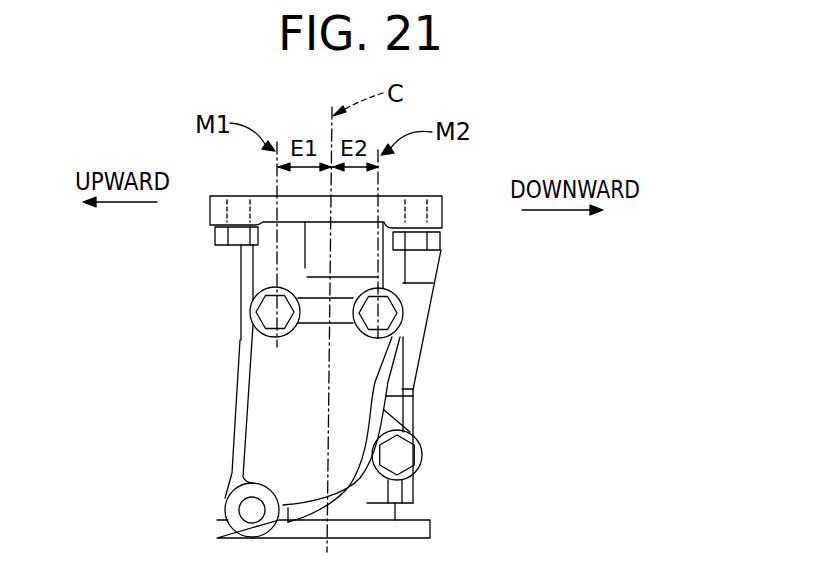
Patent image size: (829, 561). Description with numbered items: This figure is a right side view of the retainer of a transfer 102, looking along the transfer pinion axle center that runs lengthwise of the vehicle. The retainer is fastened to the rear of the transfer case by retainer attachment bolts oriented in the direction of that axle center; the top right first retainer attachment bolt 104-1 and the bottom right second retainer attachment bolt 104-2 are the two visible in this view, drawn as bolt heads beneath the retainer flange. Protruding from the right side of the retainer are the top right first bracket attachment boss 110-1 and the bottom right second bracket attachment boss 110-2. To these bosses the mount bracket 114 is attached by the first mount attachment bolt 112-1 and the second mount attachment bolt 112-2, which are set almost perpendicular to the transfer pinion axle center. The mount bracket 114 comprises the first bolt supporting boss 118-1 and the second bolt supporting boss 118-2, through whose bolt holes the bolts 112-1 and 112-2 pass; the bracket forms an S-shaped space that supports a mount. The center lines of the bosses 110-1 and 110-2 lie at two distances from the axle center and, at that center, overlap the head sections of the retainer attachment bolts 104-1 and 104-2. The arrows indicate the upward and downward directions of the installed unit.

The transfer 102 is at (474, 180).
The retainer attachment bolt NO. 1 104-1 is at (215, 236).
The retainer attachment bolt NO. 2 104-2 is at (437, 240).
The NO. 1 bolt supporting boss 118-1 is at (258, 292).
The NO. 2 bolt supporting boss 118-2 is at (404, 290).
The mount attachment bolt NO. 1 112-1 is at (266, 308).
The mount attachment bolt NO. 2 112-2 is at (385, 313).
The NO. 1 bracket attachment boss 110-1 is at (250, 338).
The NO. 2 bracket attachment boss 110-2 is at (410, 335).
The mount bracket 114 is at (222, 456).